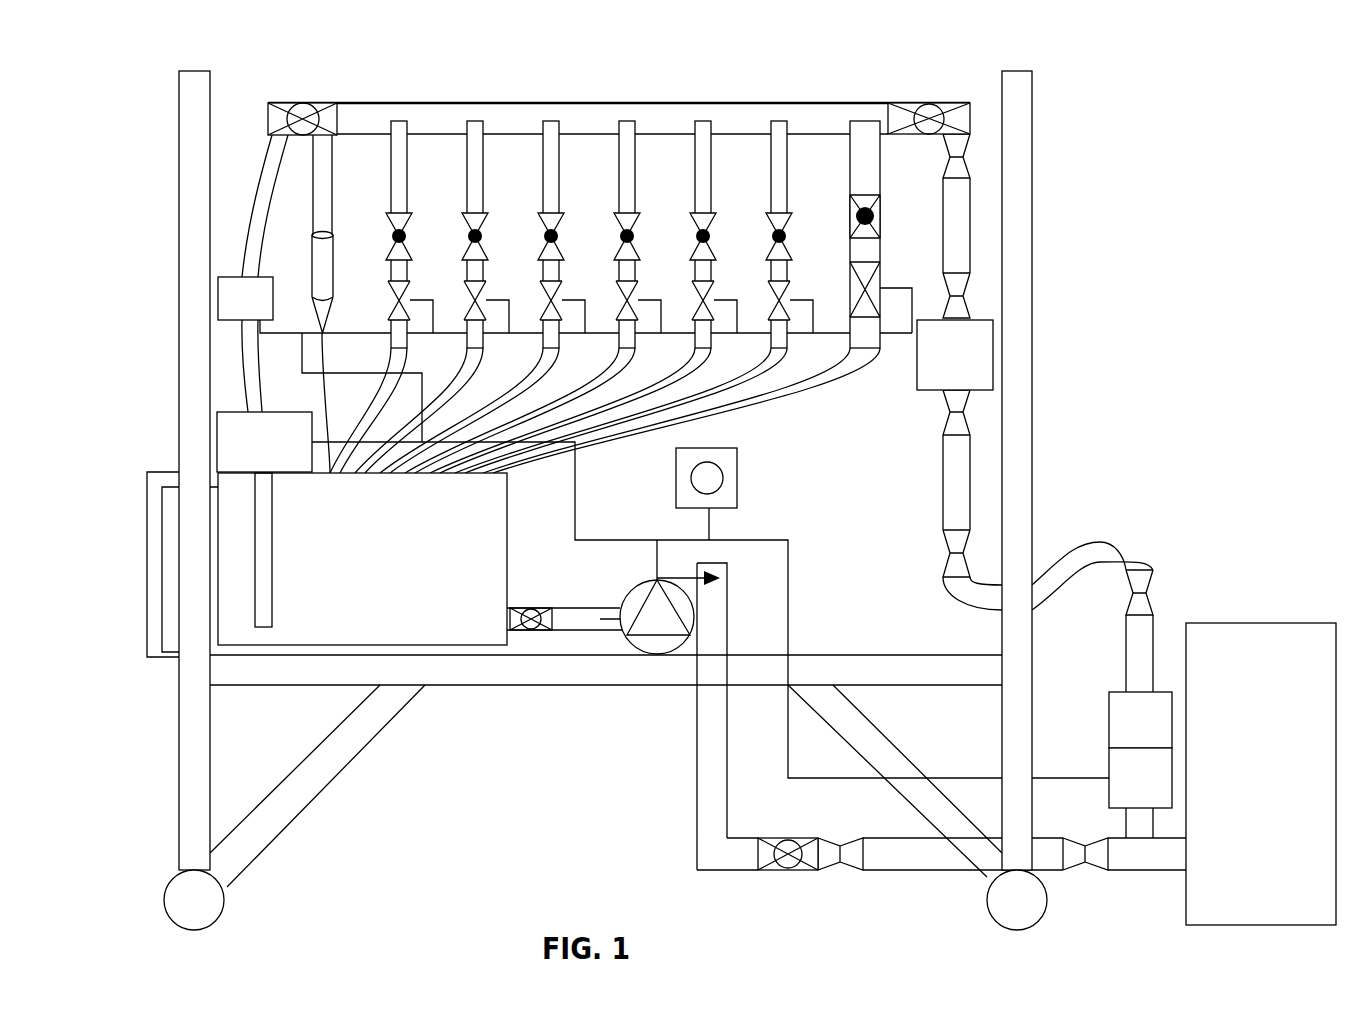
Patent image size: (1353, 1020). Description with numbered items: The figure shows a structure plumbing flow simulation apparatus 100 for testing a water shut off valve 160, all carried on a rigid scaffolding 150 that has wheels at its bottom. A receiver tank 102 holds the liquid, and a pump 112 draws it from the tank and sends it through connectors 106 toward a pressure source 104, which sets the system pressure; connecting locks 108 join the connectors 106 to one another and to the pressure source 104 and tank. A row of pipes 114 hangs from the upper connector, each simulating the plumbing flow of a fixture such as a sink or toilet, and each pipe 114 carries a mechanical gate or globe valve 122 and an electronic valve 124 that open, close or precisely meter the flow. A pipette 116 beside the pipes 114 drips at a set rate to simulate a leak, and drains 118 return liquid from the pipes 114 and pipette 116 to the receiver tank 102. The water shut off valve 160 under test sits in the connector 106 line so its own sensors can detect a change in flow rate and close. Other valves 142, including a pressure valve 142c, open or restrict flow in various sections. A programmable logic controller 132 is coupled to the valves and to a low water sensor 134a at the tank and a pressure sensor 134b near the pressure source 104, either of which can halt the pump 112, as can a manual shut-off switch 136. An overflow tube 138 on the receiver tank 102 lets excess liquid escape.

The structure plumbing flow simulation apparatus 100 is at (733, 485).
The receiver tank 102 is at (362, 559).
The pressure source 104 is at (1261, 774).
The connector 106 is at (943, 230).
The connecting lock 108 is at (943, 556).
The pump 112 is at (613, 626).
The pipe 114 is at (780, 120).
The pipette 116 is at (332, 243).
The drain 118 is at (257, 201).
The gate and/or globe valve 122 is at (852, 207).
The electronic valve 124 is at (850, 272).
The programmable logic controller 132 is at (273, 291).
The low water sensor 134a is at (276, 412).
The pressure sensor 134b is at (1109, 767).
The shut-off switch 136 is at (737, 478).
The overflow tube 138 is at (158, 473).
The other valve 142 is at (300, 104).
The pressure valve 142c is at (1109, 720).
The scaffolding 150 is at (1032, 243).
The water shut off valve 160 is at (917, 376).